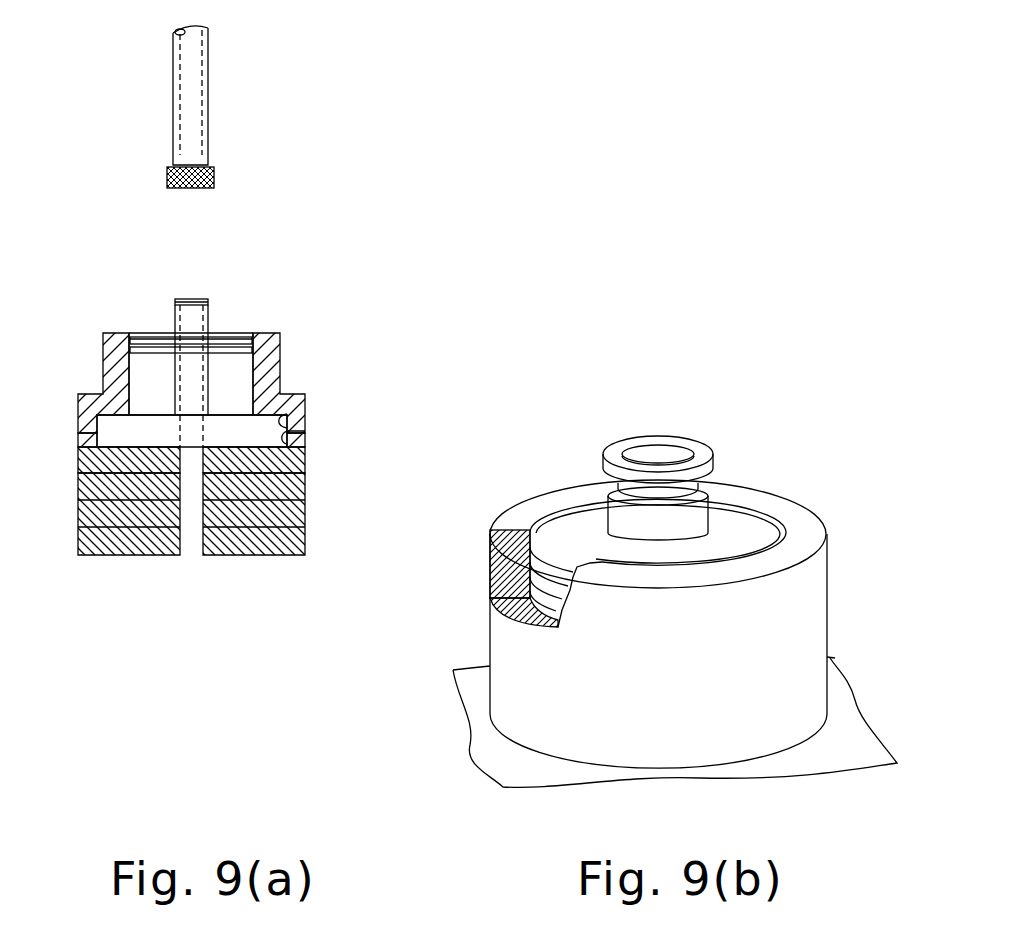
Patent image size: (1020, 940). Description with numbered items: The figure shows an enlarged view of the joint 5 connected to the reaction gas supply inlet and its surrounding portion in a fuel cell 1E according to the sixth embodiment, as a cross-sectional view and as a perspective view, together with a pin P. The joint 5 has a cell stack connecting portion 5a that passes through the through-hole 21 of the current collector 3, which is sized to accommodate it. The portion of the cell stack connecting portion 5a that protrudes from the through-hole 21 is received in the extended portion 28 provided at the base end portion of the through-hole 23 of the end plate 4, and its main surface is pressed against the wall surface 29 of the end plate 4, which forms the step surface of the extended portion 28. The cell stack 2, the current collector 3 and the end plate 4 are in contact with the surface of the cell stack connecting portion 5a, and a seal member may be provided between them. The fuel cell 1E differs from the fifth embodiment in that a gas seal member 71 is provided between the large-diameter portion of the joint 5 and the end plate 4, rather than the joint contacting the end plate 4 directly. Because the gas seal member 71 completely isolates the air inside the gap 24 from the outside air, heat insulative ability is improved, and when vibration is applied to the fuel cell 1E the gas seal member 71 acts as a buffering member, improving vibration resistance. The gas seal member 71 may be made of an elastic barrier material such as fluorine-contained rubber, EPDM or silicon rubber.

In FIG. 9A, the pin P is at (193, 93).
In FIG. 9A, the fuel cell 1E is at (434, 170).
In FIG. 9A, the cell stack 2 is at (81, 546).
In FIG. 9A, the through-hole 21 is at (103, 450).
In FIG. 9A, the current collector 3 is at (96, 443).
In FIG. 9A, the end plate 4 is at (115, 377).
In FIG. 9B, the end plate 4 is at (486, 676).
In FIG. 9A, the joint 5 is at (221, 323).
In FIG. 9B, the joint 5 is at (720, 453).
In FIG. 9A, the cell stack connecting portion 5a is at (115, 425).
In FIG. 9A, the through-hole 23 is at (128, 402).
In FIG. 9A, the gap 24 is at (237, 390).
In FIG. 9A, the extended portion 28 is at (303, 435).
In FIG. 9A, the wall surface 29 is at (287, 421).
In FIG. 9A, the gas seal member 71 is at (227, 342).
In FIG. 9B, the gas seal member 71 is at (558, 575).